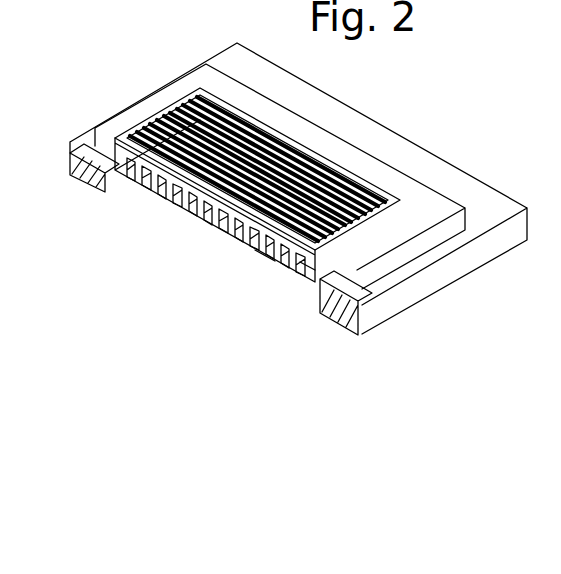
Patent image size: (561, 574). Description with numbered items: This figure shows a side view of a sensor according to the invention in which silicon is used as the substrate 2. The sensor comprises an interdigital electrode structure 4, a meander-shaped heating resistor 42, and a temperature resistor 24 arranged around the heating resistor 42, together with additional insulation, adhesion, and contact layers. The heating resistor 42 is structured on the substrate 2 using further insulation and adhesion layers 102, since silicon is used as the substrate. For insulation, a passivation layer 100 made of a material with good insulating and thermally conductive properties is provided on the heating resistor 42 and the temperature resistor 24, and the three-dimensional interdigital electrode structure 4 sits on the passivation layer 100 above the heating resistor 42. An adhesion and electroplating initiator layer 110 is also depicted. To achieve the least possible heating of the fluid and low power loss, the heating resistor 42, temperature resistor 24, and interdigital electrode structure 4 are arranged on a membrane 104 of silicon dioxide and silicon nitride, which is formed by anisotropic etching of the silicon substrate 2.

The substrate 2 is at (512, 236).
The passivation layer 100 is at (424, 218).
The interdigital electrode structure 4 is at (250, 219).
The heating resistor 42 is at (200, 205).
The temperature resistor 24 is at (300, 270).
The insulation and adhesion layers 102 is at (263, 257).
The membrane 104 is at (141, 198).
The adhesion and electroplating initiator layer 110 is at (316, 280).